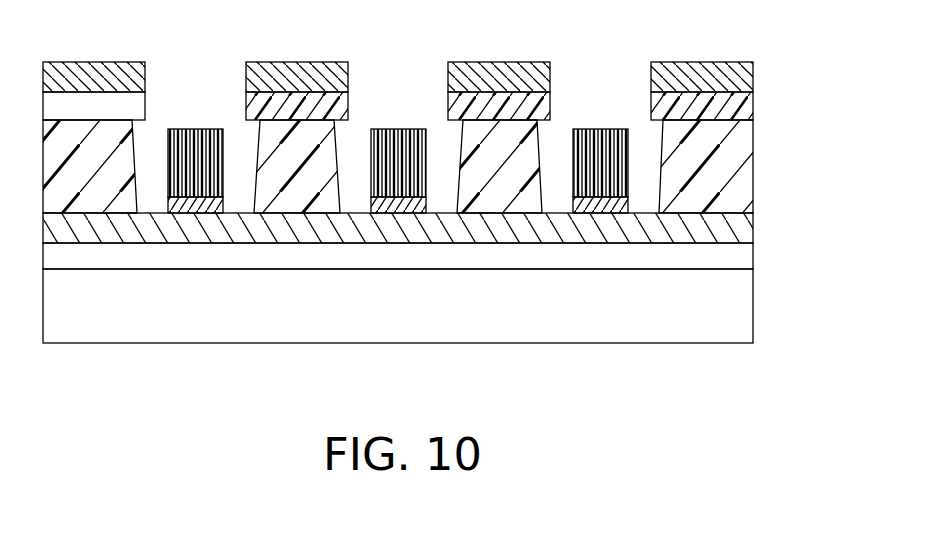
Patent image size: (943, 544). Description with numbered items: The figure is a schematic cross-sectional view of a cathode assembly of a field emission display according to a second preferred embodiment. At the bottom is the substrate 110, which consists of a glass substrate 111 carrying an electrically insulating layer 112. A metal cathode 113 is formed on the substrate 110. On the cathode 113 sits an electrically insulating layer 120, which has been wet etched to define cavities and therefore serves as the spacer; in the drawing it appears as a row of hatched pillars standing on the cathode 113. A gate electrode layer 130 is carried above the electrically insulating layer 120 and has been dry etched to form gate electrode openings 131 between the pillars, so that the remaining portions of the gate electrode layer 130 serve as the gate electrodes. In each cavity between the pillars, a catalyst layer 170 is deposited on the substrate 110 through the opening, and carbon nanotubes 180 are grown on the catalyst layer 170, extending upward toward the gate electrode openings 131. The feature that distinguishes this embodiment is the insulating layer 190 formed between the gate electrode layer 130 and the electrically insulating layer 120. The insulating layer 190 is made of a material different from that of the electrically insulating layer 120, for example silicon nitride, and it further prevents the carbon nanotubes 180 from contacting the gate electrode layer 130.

The substrate 110 is at (460, 277).
The glass substrate 111 is at (738, 308).
The electrically insulating layer 112 is at (743, 257).
The cathode 113 is at (743, 228).
The electrically insulating layer 120 is at (732, 172).
The gate electrode layer 130 is at (742, 78).
The gate electrode opening 131 is at (192, 80).
The catalyst layer 170 is at (628, 204).
The carbon nanotubes 180 is at (611, 128).
The insulating layer 190 is at (742, 107).